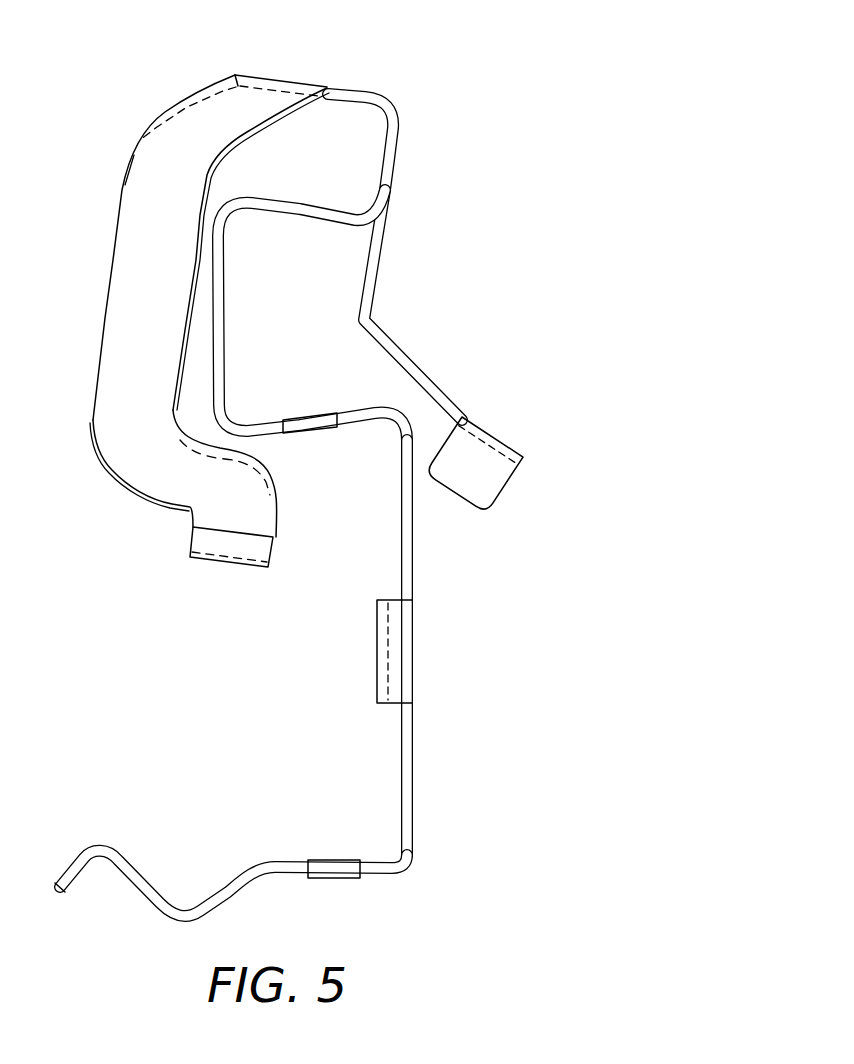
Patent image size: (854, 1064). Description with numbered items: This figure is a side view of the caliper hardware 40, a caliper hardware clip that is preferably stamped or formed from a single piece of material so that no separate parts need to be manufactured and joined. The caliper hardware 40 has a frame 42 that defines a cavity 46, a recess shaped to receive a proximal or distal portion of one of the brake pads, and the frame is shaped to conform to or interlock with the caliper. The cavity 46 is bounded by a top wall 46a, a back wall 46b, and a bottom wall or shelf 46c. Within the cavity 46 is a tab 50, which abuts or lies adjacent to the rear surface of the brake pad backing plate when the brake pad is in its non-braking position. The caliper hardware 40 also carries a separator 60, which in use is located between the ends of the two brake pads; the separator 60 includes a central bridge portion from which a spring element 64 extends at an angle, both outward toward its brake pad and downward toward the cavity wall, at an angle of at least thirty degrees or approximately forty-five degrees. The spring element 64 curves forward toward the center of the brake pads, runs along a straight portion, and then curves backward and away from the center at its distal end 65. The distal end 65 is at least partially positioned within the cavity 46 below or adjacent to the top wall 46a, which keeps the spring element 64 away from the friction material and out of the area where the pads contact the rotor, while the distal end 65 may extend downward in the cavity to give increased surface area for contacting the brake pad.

The caliper hardware 40 is at (437, 97).
The frame 42 is at (389, 179).
The cavity 46 is at (231, 664).
The top wall 46a is at (321, 432).
The back wall 46b is at (403, 767).
The bottom wall 46c is at (231, 867).
The tab 50 is at (393, 654).
The separator 60 is at (281, 78).
The spring element 64 is at (130, 318).
The distal end 65 is at (218, 564).